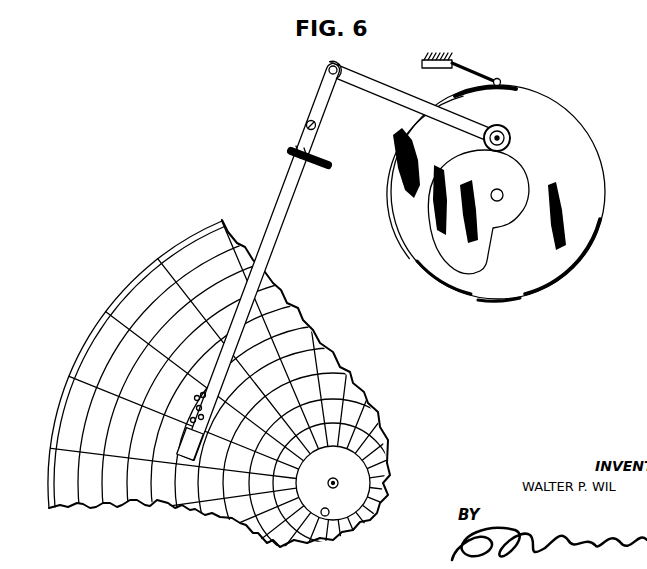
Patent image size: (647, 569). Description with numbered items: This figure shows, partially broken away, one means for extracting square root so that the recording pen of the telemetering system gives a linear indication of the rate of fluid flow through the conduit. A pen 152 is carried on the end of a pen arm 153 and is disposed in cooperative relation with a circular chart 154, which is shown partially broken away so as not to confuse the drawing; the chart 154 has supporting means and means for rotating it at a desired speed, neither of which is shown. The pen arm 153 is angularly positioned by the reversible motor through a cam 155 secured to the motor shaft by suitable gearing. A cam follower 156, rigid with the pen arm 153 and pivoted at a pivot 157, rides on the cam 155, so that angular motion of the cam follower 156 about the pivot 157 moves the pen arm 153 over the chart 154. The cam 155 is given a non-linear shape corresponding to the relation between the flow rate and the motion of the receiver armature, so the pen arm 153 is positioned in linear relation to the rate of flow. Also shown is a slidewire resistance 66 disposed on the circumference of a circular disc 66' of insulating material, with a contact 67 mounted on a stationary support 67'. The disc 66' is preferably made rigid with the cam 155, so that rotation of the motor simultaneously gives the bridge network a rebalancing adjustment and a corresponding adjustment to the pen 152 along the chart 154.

The slidewire resistance 66 is at (496, 192).
The circular disc 66' is at (499, 311).
The contact 67 is at (493, 77).
The stationary support 67' is at (460, 55).
The pen 152 is at (181, 448).
The pen arm 153 is at (282, 226).
The circular chart 154 is at (120, 303).
The cam 155 is at (518, 173).
The cam follower 156 is at (389, 100).
The pivot 157 is at (329, 70).